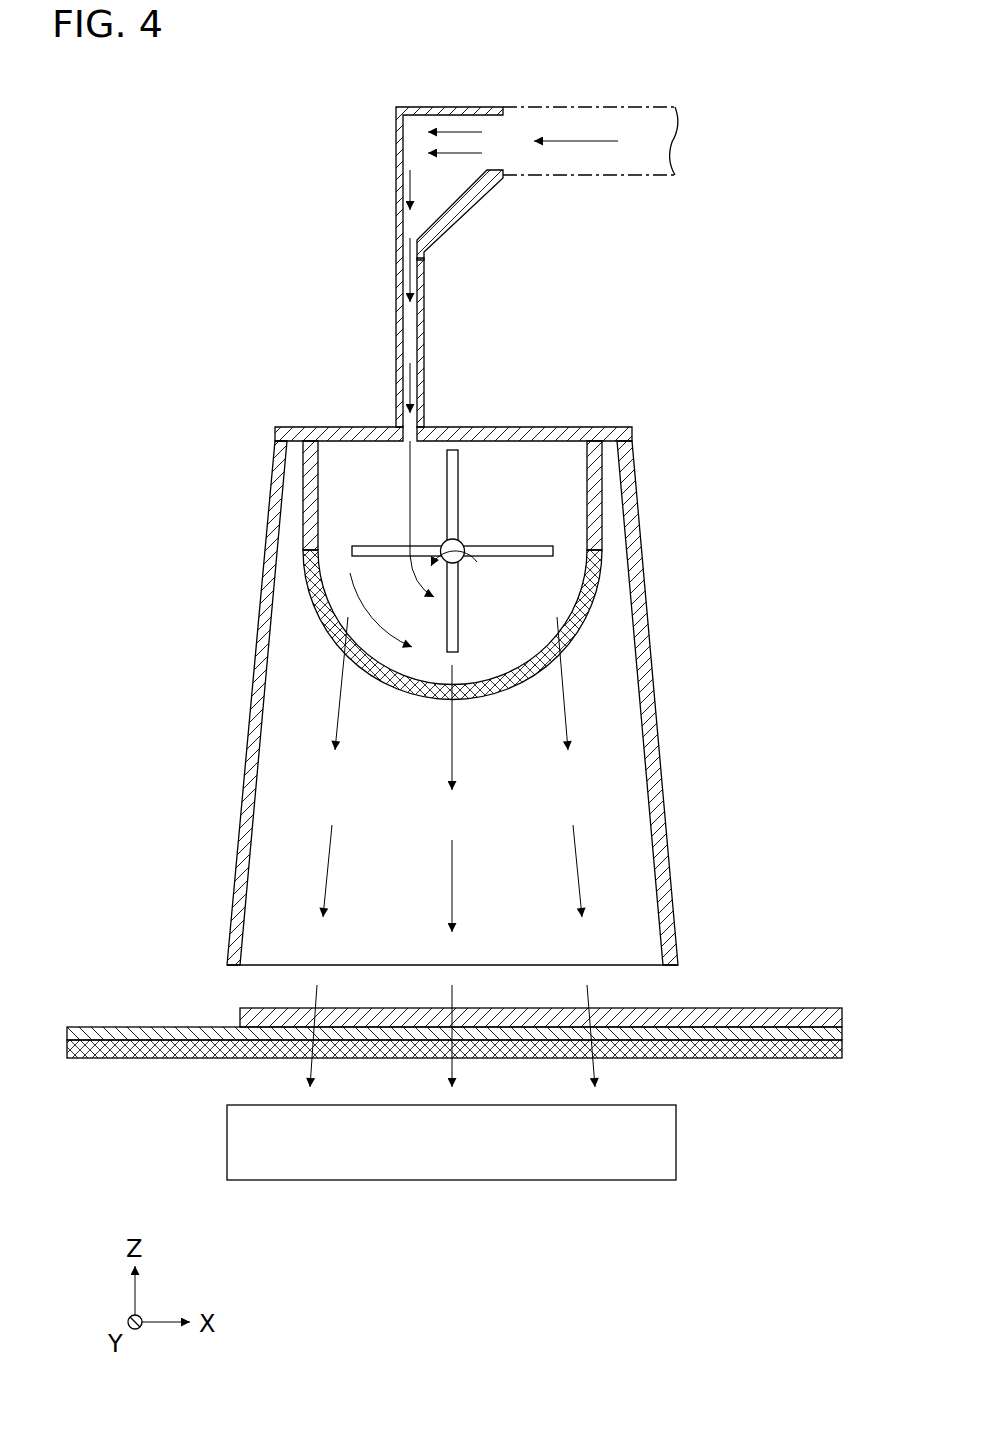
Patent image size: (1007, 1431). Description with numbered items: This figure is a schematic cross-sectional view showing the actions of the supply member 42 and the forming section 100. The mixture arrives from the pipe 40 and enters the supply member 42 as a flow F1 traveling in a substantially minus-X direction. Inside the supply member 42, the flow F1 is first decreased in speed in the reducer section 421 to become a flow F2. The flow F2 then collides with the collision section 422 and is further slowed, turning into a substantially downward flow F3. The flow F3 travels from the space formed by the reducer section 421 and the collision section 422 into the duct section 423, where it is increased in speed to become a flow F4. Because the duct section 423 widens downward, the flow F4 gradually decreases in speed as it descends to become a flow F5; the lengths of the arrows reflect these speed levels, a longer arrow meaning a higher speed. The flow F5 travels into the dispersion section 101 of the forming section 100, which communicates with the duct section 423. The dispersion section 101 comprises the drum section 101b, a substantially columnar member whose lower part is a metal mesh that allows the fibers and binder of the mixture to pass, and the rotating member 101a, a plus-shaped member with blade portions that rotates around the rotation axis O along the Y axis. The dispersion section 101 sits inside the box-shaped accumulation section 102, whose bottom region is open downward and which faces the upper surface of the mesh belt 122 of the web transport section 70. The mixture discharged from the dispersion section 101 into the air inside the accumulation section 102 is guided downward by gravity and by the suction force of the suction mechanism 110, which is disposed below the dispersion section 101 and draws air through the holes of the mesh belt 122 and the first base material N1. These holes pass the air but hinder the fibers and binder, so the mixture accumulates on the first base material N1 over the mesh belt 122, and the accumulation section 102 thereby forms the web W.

The pipe 40 is at (673, 108).
The supply member 42 is at (415, 233).
The reducer section 421 is at (457, 207).
The collision section 422 is at (407, 147).
The duct section 423 is at (425, 340).
The forming section 100 is at (537, 728).
The dispersion section 101 is at (558, 570).
The rotating member 101a is at (530, 546).
The drum section 101b is at (600, 580).
The accumulation section 102 is at (657, 698).
The suction mechanism 110 is at (676, 1140).
The mesh belt 122 is at (122, 1060).
The web transport section 70 is at (454, 1128).
The first base material N1 is at (127, 1027).
The web W is at (787, 1008).
The rotation axis O is at (459, 562).
The flow F1 is at (580, 140).
The flow F2 is at (457, 155).
The flow F3 is at (407, 182).
The flow F4 is at (410, 255).
The flow F5 is at (410, 385).